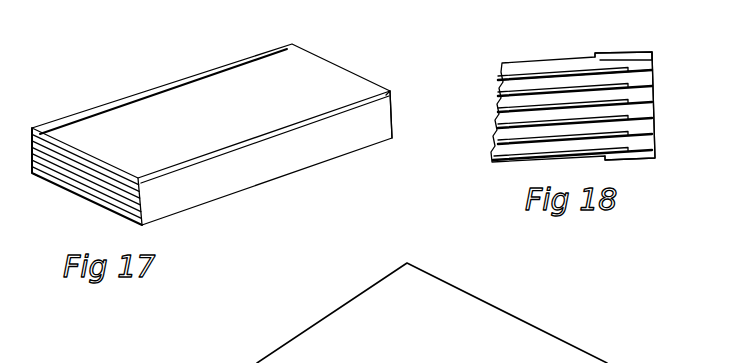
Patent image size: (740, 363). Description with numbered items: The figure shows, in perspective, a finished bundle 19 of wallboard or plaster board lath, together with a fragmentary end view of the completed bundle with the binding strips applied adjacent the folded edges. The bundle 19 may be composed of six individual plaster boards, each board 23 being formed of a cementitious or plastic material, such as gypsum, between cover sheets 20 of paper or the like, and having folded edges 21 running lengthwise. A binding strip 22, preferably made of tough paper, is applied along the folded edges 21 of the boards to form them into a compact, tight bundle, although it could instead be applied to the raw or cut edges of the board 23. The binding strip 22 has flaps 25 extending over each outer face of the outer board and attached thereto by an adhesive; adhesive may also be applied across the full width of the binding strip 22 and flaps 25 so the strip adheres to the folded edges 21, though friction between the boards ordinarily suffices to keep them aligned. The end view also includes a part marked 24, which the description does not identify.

In FIG. 17, the bundle 19 is at (343, 68).
In FIG. 18, the cover sheets 20 is at (520, 62).
In FIG. 18, the folded edges 21 is at (655, 145).
In FIG. 17, the binding strip 22 is at (343, 142).
In FIG. 17, the board 23 is at (138, 112).
In FIG. 18, the top strip 24 is at (627, 63).
In FIG. 17, the flaps 25 is at (376, 88).